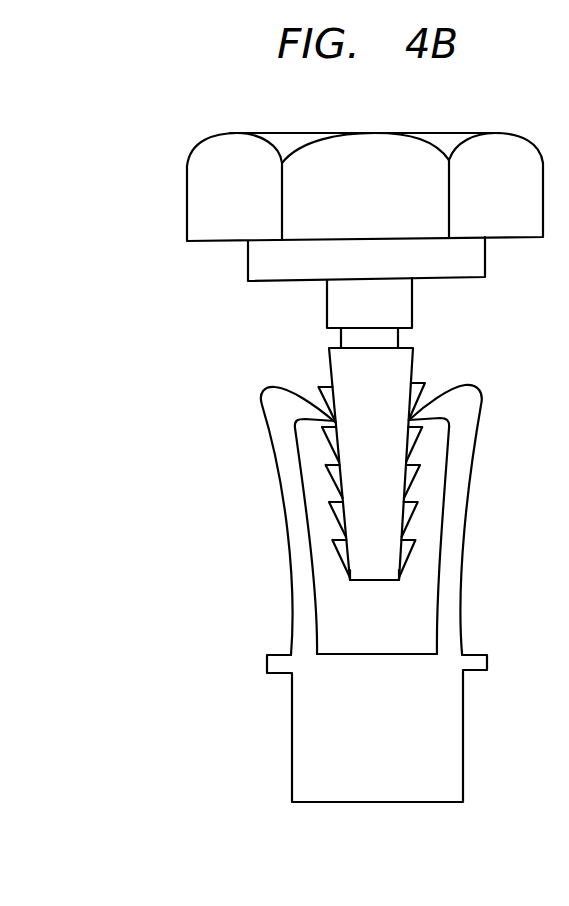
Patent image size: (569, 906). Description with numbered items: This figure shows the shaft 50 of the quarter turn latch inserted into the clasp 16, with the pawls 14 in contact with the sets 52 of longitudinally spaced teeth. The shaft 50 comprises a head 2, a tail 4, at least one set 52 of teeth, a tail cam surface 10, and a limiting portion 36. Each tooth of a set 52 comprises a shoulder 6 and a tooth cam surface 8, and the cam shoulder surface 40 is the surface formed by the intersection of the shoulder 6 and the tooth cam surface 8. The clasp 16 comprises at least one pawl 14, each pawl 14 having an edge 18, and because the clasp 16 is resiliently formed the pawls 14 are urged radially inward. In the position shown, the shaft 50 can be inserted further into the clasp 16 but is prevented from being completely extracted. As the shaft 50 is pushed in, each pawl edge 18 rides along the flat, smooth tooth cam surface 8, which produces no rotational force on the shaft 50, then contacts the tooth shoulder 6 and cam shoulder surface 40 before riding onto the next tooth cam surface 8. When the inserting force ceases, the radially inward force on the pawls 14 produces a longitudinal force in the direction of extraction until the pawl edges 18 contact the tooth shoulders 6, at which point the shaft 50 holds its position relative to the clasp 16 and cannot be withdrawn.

The head 2 is at (216, 163).
The shaft 50 is at (140, 265).
The limiting portion 36 is at (327, 303).
The tail 4 is at (374, 467).
The tail cam surface 10 is at (382, 378).
The shoulder 6 is at (330, 458).
The edge 18 is at (417, 422).
The cam shoulder surface 40 is at (416, 497).
The tooth cam surface 8 is at (417, 520).
The pawl 14 is at (292, 539).
The set of longitudinally spaced teeth 52 is at (338, 572).
The clasp 16 is at (366, 593).